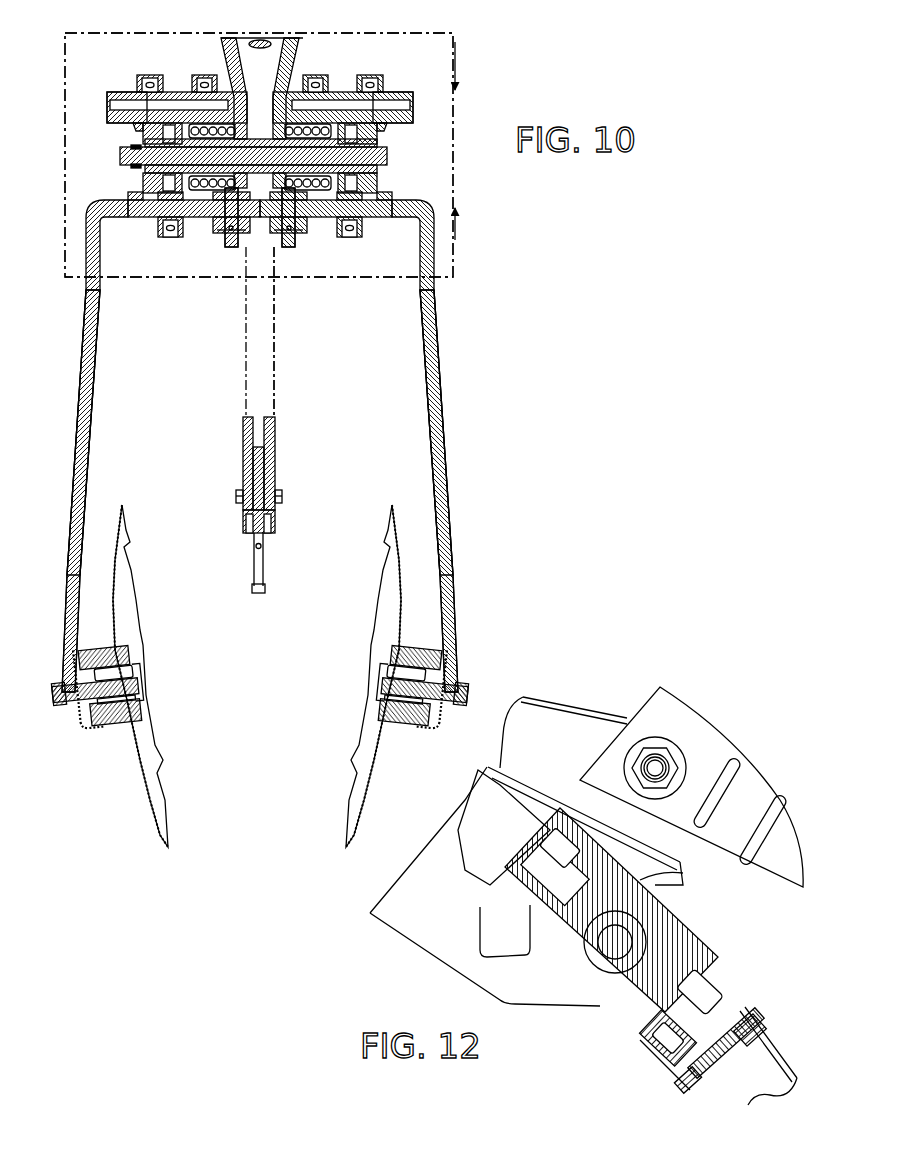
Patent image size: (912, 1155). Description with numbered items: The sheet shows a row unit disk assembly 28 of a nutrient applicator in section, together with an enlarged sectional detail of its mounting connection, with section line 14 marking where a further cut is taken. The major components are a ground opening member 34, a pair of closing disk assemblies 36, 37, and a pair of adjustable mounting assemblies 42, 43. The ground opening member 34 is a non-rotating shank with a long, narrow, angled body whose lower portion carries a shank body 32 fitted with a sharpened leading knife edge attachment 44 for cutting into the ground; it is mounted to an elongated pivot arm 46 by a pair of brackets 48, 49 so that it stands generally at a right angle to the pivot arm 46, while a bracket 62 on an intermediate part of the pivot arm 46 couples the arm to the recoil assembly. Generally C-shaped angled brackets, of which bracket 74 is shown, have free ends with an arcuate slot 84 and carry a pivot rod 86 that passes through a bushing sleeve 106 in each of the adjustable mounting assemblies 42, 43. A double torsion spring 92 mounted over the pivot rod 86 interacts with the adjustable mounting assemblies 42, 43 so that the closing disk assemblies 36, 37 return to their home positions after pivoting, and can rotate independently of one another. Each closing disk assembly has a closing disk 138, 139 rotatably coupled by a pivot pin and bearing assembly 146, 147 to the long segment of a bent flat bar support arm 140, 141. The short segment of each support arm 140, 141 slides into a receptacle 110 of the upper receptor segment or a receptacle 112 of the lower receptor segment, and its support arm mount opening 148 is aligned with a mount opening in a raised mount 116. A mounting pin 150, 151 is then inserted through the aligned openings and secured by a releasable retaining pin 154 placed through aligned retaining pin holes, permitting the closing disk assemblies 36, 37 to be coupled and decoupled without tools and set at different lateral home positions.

In FIG. 10, the row unit disk assembly 28 is at (460, 37).
In FIG. 10, the section line 14 is at (470, 141).
In FIG. 10, the adjustable mounting assembly 42 is at (123, 128).
In FIG. 12, the adjustable mounting assembly 42 is at (696, 955).
In FIG. 10, the adjustable mounting assembly 43 is at (397, 128).
In FIG. 10, the pivot rod 86 is at (378, 160).
In FIG. 12, the pivot rod 86 is at (615, 942).
In FIG. 10, the mounting pin 150 is at (232, 243).
In FIG. 12, the mounting pin 150 is at (735, 1076).
In FIG. 10, the mounting pin 151 is at (288, 243).
In FIG. 10, the closing disk assembly 36 is at (72, 413).
In FIG. 10, the closing disk assembly 37 is at (455, 481).
In FIG. 10, the support arm 140 is at (92, 404).
In FIG. 12, the support arm 140 is at (665, 1056).
In FIG. 10, the support arm 141 is at (437, 443).
In FIG. 12, the support arm 141 is at (768, 1072).
In FIG. 10, the bracket 48 is at (243, 449).
In FIG. 10, the bracket 49 is at (275, 449).
In FIG. 10, the ground opening member 34 is at (259, 500).
In FIG. 10, the rod 32 is at (265, 568).
In FIG. 10, the knife edge attachment 44 is at (258, 594).
In FIG. 10, the pivot pin and bearing assembly 146 is at (78, 722).
In FIG. 10, the pivot pin and bearing assembly 147 is at (445, 722).
In FIG. 10, the closing disk 138 is at (148, 782).
In FIG. 10, the closing disk 139 is at (348, 778).
In FIG. 12, the pivot arm 46 is at (568, 725).
In FIG. 12, the bracket 62 is at (700, 748).
In FIG. 12, the raised mount 116 is at (505, 825).
In FIG. 12, the receptacle 110 is at (522, 880).
In FIG. 12, the torsion spring 92 is at (674, 882).
In FIG. 12, the bushing sleeve 106 is at (636, 928).
In FIG. 12, the receptacle 112 is at (712, 995).
In FIG. 12, the retaining pin 154 is at (758, 1030).
In FIG. 12, the support arm mount opening 148 is at (670, 1026).
In FIG. 12, the angled bracket 74 is at (400, 918).
In FIG. 12, the arcuate slot 84 is at (476, 945).